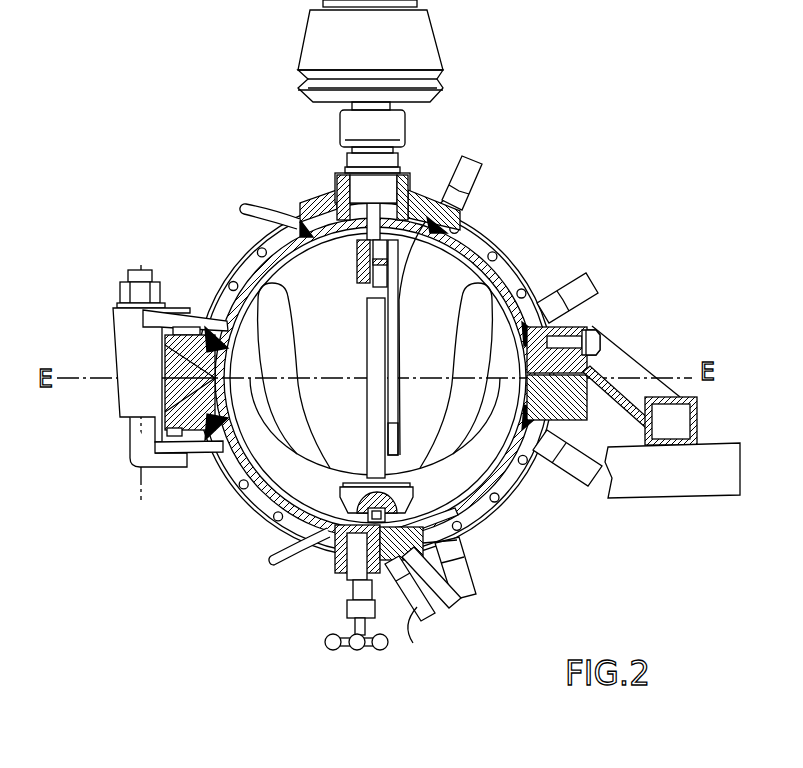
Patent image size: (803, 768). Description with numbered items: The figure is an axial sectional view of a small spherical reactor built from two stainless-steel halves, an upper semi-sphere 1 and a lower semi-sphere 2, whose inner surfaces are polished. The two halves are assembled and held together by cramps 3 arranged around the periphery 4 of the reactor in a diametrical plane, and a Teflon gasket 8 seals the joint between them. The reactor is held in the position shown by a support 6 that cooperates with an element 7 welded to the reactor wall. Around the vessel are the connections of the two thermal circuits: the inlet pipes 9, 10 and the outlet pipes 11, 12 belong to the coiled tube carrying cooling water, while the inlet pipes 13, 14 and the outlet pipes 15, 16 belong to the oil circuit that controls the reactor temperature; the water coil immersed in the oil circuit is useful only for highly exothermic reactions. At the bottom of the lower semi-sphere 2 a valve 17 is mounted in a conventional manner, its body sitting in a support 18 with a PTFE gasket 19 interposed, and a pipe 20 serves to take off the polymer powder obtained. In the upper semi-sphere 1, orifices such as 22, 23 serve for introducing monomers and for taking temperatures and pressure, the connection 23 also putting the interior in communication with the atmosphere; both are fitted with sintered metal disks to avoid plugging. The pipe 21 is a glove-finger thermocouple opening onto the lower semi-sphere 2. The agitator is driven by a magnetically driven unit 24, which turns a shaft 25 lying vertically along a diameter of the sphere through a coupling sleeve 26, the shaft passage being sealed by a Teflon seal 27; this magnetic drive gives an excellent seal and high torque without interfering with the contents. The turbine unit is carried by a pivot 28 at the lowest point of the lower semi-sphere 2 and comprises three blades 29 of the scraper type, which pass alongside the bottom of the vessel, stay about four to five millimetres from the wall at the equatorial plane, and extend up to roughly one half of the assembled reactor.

The upper semi-sphere 1 is at (488, 186).
The lower semi-sphere 2 is at (497, 517).
The cramps 3 is at (127, 331).
The periphery 4 is at (177, 410).
The support 6 is at (697, 417).
The element 7 is at (587, 403).
The Teflon gasket 8 is at (180, 421).
The inlet pipe of the coiled tube 9 is at (280, 547).
The inlet pipe of the coiled tube 10 is at (193, 318).
The outlet pipe of the coiled water tube 11 is at (200, 454).
The outlet pipe of the coiled water tube 12 is at (270, 211).
The inlet pipe of the temperature controlling oil circuit 13 is at (463, 583).
The inlet pipe of the temperature controlling oil circuit 14 is at (567, 293).
The oil outlet pipe 15 is at (567, 457).
The oil outlet pipe 16 is at (461, 173).
The valve 17 is at (347, 604).
The support 18 is at (430, 598).
The PTFE gasket 19 is at (447, 590).
The pipe 20 is at (426, 634).
The glove finger thermocouple 21 is at (483, 270).
The orifice 22 is at (423, 200).
The connection 23 is at (331, 199).
The unit 24 is at (428, 48).
The shaft 25 is at (370, 310).
The coupling sleeve 26 is at (368, 262).
The Teflon seal 27 is at (408, 275).
The pivot 28 is at (440, 540).
The blades 29 is at (258, 507).